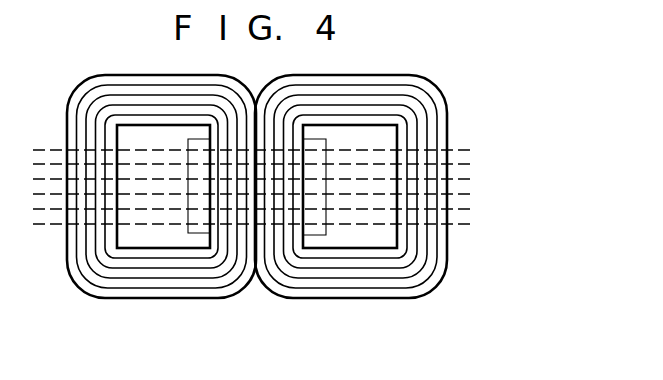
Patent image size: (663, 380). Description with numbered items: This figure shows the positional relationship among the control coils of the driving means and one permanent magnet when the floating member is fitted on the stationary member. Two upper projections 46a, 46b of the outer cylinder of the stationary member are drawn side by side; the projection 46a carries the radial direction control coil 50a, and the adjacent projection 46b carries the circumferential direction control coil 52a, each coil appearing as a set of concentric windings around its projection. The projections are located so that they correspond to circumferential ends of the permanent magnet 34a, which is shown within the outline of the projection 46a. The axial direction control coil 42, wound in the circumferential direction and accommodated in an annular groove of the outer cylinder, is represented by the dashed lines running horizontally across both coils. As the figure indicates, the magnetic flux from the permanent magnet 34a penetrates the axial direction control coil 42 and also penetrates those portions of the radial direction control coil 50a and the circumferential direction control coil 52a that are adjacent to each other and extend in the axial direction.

The radial direction control coil 50a is at (128, 85).
The circumferential direction control coil 52a is at (400, 88).
The upper projection 46a is at (148, 236).
The upper projection 46b is at (375, 238).
The permanent magnet 34a is at (195, 236).
The axial direction control coil 42 is at (460, 163).